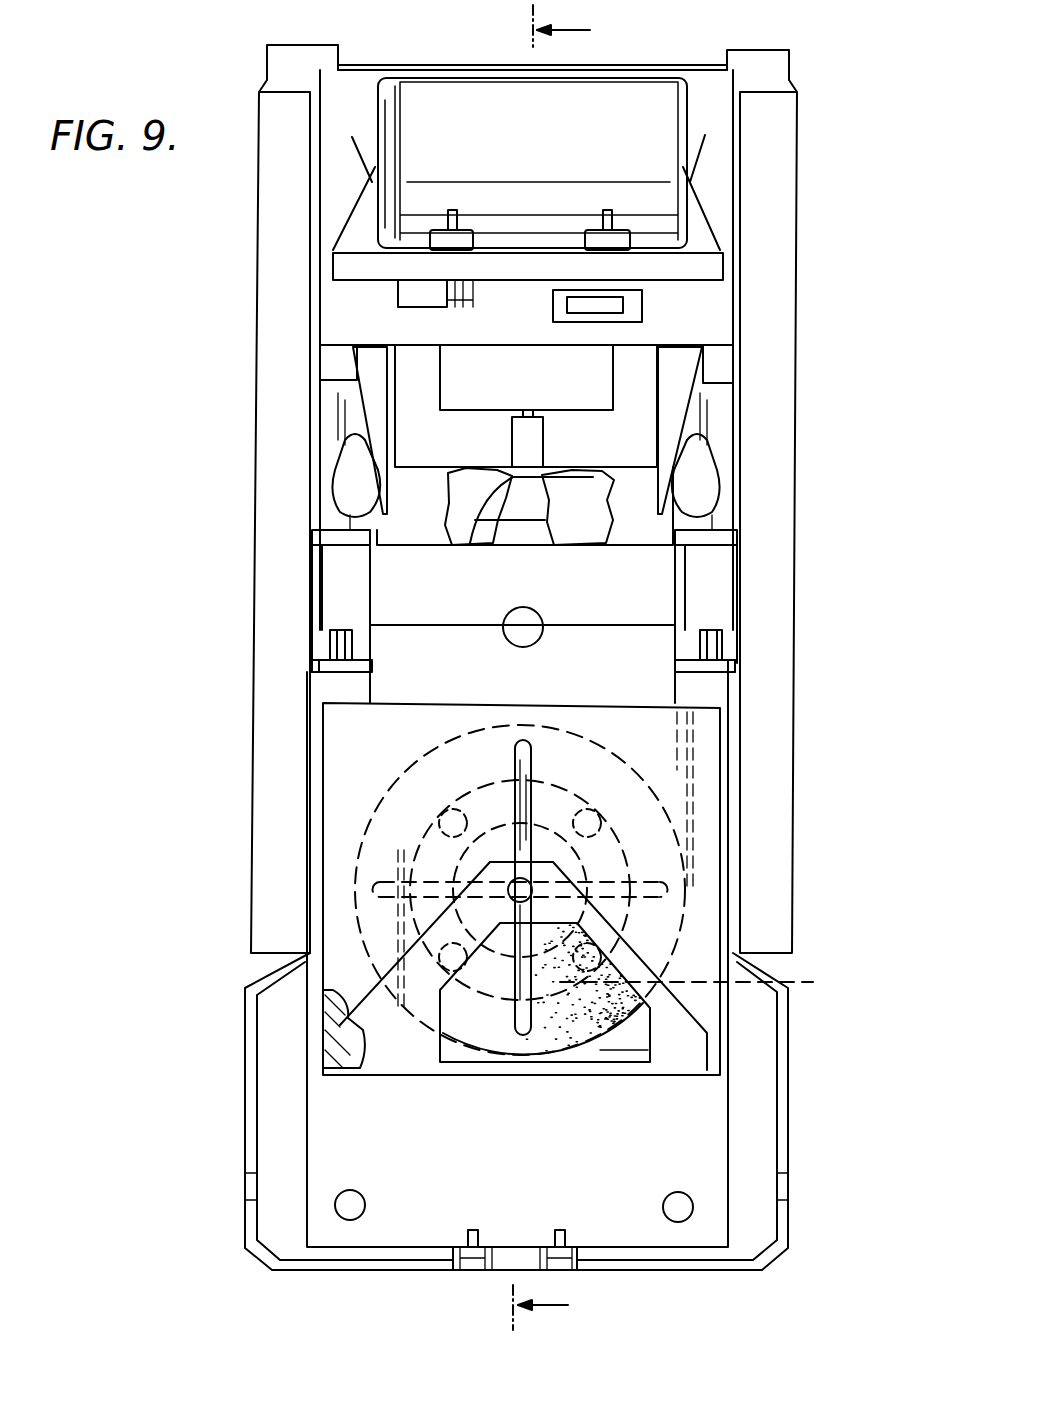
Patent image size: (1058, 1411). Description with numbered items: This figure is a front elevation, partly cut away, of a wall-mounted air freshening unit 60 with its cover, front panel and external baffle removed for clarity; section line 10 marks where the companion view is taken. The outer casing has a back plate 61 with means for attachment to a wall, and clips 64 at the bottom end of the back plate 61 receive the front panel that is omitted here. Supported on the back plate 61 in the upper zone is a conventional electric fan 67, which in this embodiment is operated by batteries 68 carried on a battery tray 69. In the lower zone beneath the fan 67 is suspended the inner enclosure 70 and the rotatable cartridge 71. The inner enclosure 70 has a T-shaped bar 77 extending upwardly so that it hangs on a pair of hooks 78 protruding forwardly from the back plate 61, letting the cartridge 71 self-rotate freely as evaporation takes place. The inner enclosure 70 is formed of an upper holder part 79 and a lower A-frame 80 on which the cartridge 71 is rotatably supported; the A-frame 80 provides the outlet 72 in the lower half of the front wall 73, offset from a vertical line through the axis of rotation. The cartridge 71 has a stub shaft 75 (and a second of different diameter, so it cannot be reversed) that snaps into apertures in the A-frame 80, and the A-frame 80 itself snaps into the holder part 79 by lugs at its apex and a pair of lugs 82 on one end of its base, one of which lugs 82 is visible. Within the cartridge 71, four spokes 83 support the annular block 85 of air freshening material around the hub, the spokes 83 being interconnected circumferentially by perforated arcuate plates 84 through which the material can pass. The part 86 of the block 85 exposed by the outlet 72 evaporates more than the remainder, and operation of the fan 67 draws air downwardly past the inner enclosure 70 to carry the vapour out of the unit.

The section line 10 is at (574, 667).
The air freshening unit 60 is at (188, 645).
The back plate 61 is at (259, 415).
The clips 64 is at (547, 1243).
The electric fan 67 is at (538, 500).
The batteries 68 is at (453, 100).
The battery tray 69 is at (713, 267).
The inner enclosure 70 is at (593, 700).
The rotatable cartridge 71 is at (612, 1035).
The outlet 72 is at (640, 1030).
The front wall 73 is at (585, 905).
The stub shaft 75 is at (517, 873).
The T-shaped bar 77 is at (390, 673).
The hooks 78 is at (335, 655).
The upper holder part 79 is at (670, 777).
The A-frame 80 is at (397, 960).
The lugs 82 is at (323, 1035).
The spokes 83 is at (577, 742).
The arcuate plates 84 is at (690, 830).
The annular block of air freshening material 85 is at (577, 1027).
The exposed part 86 is at (480, 958).